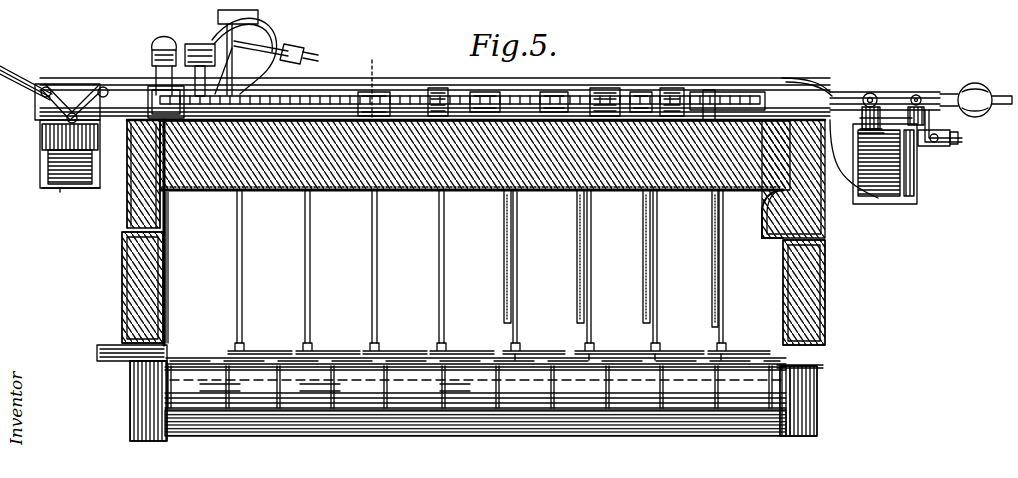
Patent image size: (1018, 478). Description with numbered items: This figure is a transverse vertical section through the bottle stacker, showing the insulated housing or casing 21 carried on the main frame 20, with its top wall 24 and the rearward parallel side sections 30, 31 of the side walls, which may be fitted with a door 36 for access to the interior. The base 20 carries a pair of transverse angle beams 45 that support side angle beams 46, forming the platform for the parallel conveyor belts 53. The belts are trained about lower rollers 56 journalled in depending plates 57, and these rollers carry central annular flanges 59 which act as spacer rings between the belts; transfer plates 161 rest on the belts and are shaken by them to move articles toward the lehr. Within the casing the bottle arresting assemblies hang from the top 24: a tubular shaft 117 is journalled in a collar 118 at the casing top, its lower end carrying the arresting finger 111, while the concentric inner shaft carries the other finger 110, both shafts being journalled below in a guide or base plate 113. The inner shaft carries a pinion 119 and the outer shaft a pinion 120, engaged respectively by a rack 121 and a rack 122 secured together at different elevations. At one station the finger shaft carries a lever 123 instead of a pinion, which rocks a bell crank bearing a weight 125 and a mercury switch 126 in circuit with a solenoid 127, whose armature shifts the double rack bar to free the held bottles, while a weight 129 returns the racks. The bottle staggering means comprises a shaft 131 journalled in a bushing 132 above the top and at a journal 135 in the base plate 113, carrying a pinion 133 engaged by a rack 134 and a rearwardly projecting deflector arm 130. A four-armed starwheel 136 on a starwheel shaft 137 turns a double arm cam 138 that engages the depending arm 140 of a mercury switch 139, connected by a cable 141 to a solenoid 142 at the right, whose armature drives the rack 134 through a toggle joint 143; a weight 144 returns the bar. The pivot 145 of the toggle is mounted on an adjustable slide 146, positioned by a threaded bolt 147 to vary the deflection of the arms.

The main frame 20 is at (130, 392).
The insulated housing or casing 21 is at (128, 216).
The top wall 24 is at (612, 128).
The parallel side section 30 is at (138, 182).
The parallel side section 31 is at (810, 234).
The door 36 is at (124, 288).
The transverse angle beam 45 is at (336, 412).
The side angle beam 46 is at (125, 362).
The conveyor belt 53 is at (480, 380).
The lower roller 56 is at (398, 400).
The depending plate 57 is at (434, 412).
The central annular flange 59 is at (234, 402).
The bottle arresting finger 110 is at (244, 310).
The bottle arresting finger 111 is at (382, 328).
The guide or base plate 113 is at (246, 342).
The tubular shaft 117 is at (243, 268).
The collar 118 is at (484, 92).
The pinion 119 is at (375, 77).
The pinion 120 is at (344, 90).
The rack 121 is at (195, 42).
The rack 122 is at (396, 92).
The lever 123 is at (284, 92).
The weight 125 is at (302, 44).
The mercury switch 126 is at (268, 20).
The solenoid 127 is at (72, 198).
The weight 129 is at (6, 58).
The deflector arm 130 is at (538, 354).
The shaft 131 is at (520, 314).
The bushing 132 is at (642, 92).
The pinion 133 is at (675, 88).
The rack 134 is at (600, 88).
The journal 135 is at (549, 92).
The starwheel 136 is at (200, 314).
The starwheel shaft 137 is at (168, 284).
The double arm cam 138 is at (105, 84).
The mercury switch 139 is at (142, 60).
The depending arm 140 is at (140, 72).
The cable 141 is at (716, 90).
The solenoid 142 is at (888, 198).
The toggle joint 143 is at (848, 92).
The weight 144 is at (978, 112).
The pivot 145 is at (916, 94).
The adjustable slide 146 is at (948, 86).
The threaded bolt 147 is at (952, 150).
The transfer plate 161 is at (398, 360).